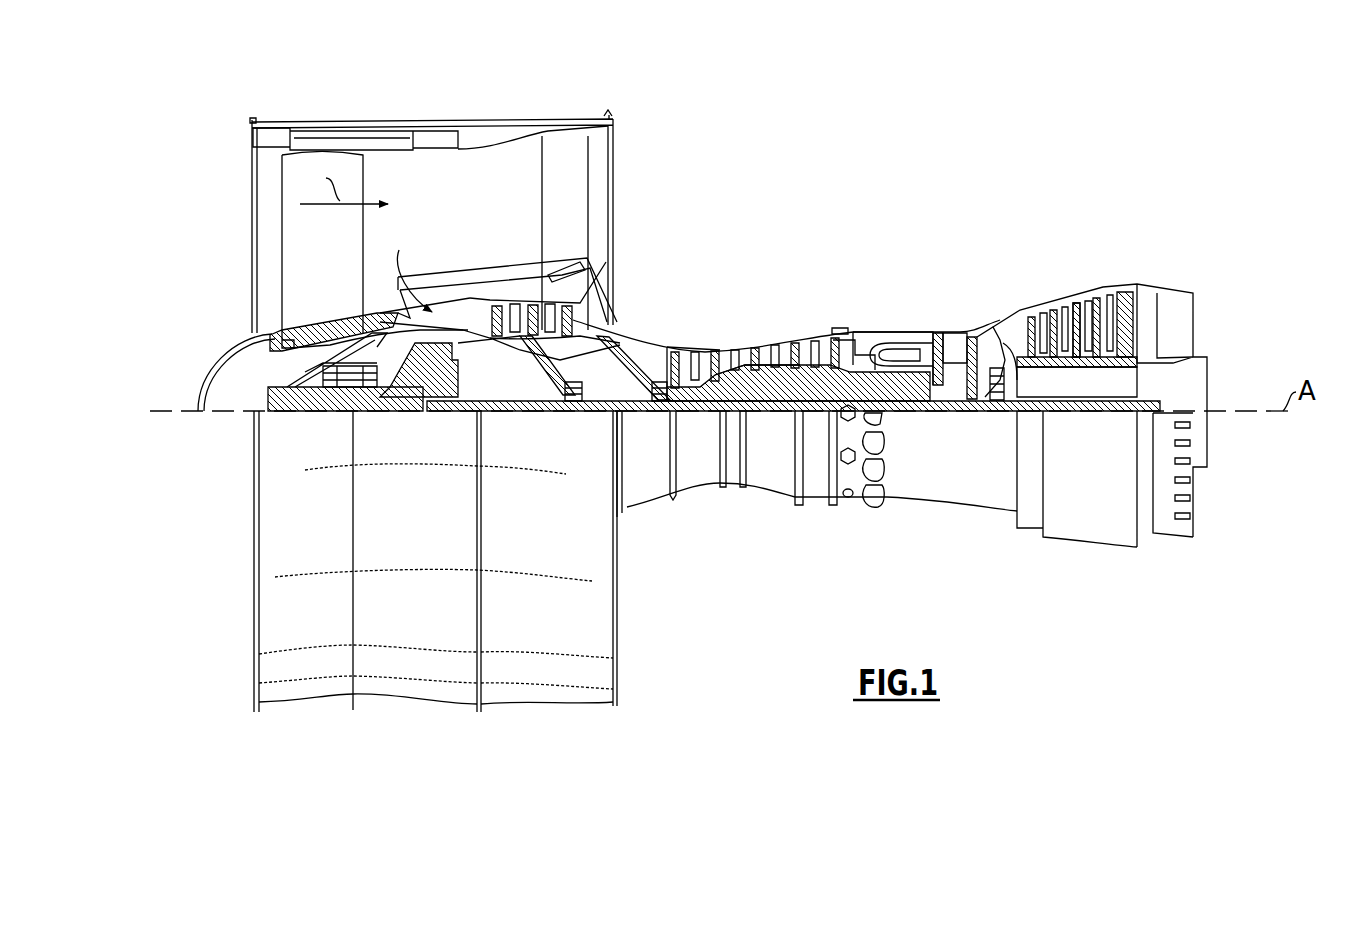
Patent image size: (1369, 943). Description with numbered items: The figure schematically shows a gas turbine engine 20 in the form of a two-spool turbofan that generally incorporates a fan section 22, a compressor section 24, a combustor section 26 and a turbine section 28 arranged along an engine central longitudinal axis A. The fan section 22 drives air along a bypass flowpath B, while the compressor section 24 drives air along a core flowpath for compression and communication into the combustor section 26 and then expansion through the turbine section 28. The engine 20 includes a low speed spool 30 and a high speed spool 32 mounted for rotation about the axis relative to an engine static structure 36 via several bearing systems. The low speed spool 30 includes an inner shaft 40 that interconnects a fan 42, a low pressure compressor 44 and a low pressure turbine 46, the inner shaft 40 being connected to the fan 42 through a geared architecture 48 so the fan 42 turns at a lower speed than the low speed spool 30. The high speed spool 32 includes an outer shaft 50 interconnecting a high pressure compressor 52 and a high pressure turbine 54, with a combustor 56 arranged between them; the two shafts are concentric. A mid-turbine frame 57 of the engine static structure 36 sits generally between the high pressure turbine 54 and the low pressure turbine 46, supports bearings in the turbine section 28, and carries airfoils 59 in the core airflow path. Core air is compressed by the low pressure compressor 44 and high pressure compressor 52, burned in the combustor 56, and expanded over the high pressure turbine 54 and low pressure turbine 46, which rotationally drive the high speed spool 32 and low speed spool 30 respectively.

The gas turbine engine 20 is at (898, 178).
The fan section 22 is at (364, 118).
The compressor section 24 is at (662, 318).
The combustor section 26 is at (887, 308).
The turbine section 28 is at (1036, 268).
The low speed spool 30 is at (772, 421).
The high speed spool 32 is at (814, 376).
The engine static structure 36 is at (813, 502).
The inner shaft 40 is at (628, 413).
The fan 42 is at (338, 257).
The low pressure compressor 44 is at (557, 303).
The low pressure turbine 46 is at (1080, 291).
The geared architecture 48 is at (443, 394).
The outer shaft 50 is at (893, 396).
The high pressure compressor 52 is at (750, 383).
The high pressure turbine 54 is at (957, 336).
The combustor 56 is at (888, 356).
The mid-turbine frame 57 is at (1001, 330).
The airfoils 59 is at (1004, 346).